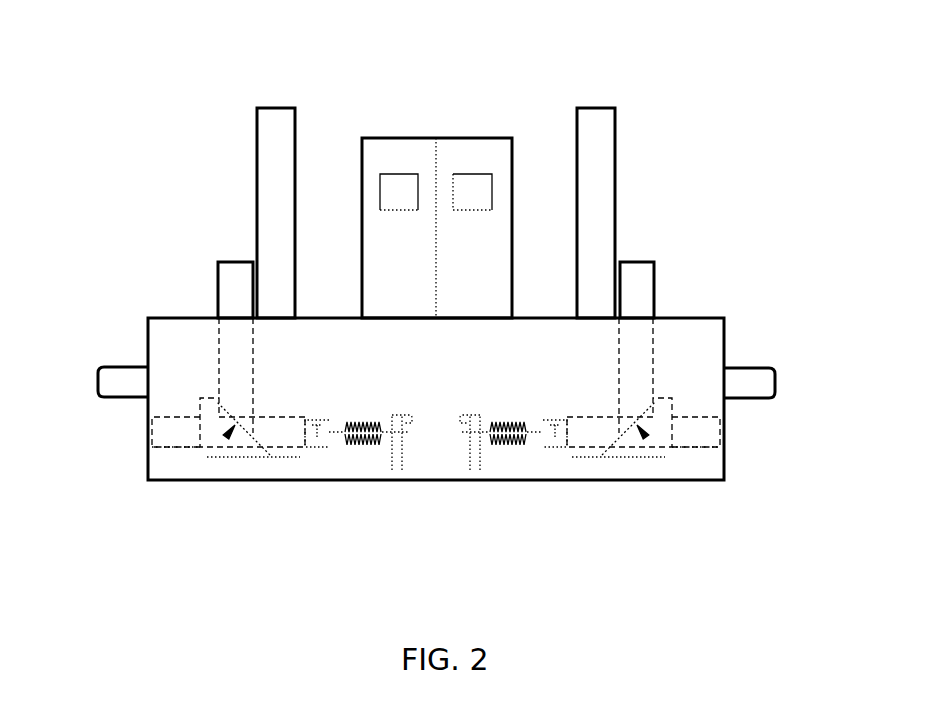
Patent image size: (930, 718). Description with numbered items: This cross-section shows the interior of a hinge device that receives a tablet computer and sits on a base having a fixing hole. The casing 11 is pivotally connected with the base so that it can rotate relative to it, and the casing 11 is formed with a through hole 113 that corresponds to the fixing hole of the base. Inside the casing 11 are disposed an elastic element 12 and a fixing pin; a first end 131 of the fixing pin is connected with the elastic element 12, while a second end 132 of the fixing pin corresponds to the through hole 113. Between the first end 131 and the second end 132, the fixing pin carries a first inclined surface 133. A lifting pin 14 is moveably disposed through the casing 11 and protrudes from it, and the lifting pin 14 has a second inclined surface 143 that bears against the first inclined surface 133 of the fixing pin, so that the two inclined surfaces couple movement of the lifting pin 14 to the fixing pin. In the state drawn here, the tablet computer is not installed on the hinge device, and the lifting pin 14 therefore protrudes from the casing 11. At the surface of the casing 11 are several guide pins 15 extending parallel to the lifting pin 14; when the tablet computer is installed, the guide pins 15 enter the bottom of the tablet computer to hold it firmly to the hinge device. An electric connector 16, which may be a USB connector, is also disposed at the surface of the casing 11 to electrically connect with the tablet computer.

The casing 11 is at (148, 318).
The elastic element 12 is at (370, 446).
The lifting pin 14 is at (253, 378).
The guide pins 15 is at (257, 108).
The electric connector 16 is at (462, 138).
The through hole 113 is at (118, 428).
The first end 131 is at (318, 447).
The second end 132 is at (160, 448).
The first inclined surface 133 is at (257, 433).
The second inclined surface 143 is at (226, 437).